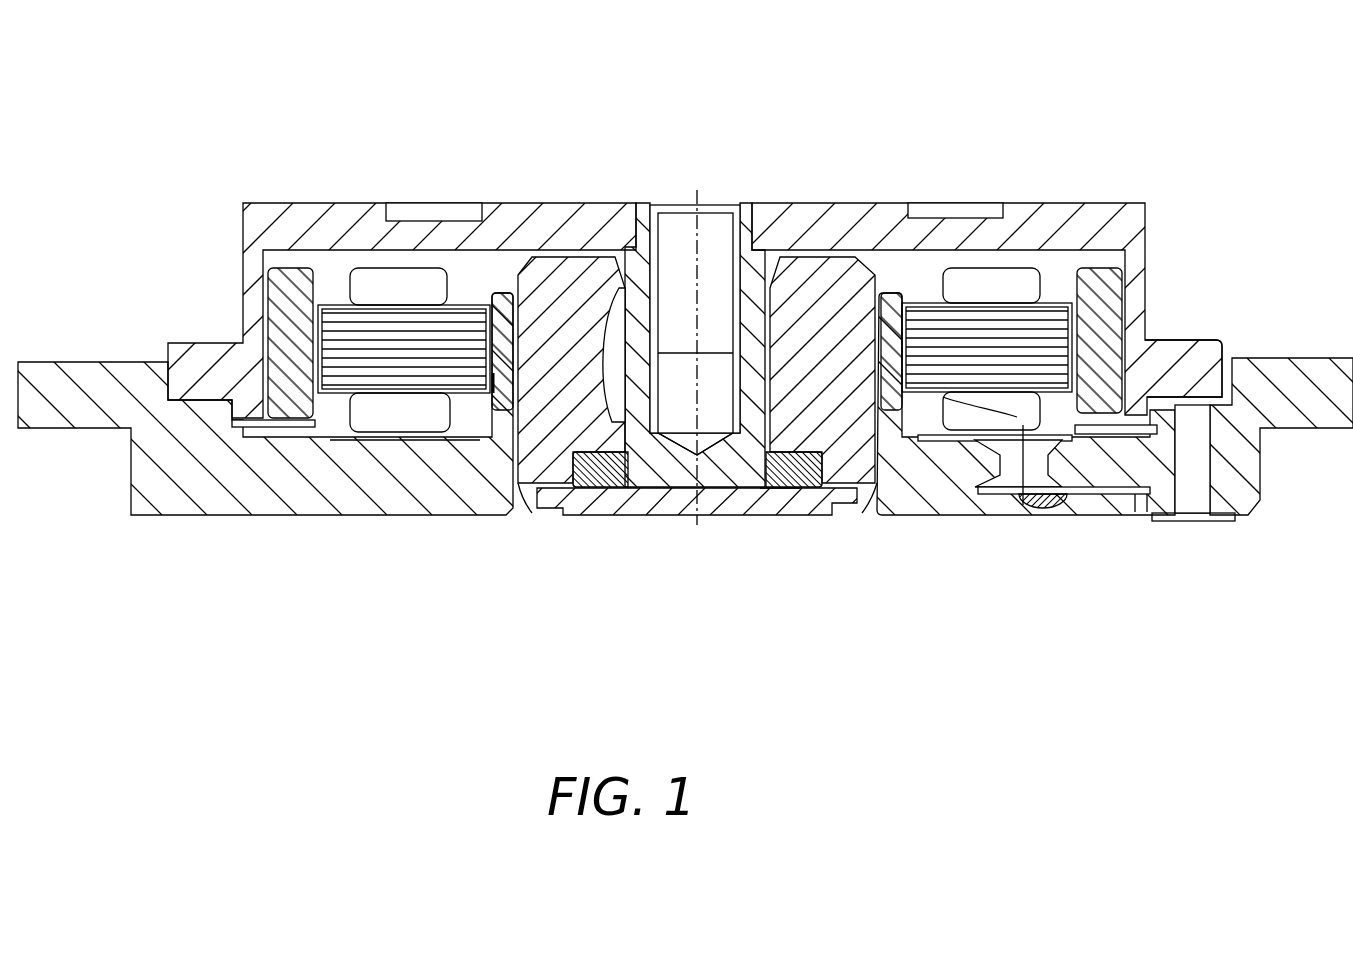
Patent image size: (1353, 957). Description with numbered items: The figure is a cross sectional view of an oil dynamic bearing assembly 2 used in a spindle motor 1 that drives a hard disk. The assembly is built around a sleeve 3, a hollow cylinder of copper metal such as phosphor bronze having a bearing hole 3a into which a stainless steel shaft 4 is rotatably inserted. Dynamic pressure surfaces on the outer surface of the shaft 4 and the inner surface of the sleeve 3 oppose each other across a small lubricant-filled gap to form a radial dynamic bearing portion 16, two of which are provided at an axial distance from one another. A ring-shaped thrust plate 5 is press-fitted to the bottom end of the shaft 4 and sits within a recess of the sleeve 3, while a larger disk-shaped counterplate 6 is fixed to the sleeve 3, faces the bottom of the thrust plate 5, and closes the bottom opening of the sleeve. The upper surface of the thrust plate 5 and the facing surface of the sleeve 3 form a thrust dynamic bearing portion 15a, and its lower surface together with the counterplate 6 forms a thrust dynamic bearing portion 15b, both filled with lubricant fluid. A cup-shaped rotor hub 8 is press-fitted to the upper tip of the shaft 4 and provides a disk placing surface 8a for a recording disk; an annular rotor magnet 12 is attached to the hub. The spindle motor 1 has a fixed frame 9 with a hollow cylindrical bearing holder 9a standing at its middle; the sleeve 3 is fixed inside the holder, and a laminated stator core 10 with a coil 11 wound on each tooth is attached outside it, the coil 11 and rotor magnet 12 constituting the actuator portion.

The spindle motor 1 is at (982, 114).
The oil dynamic bearing assembly 2 is at (570, 548).
The sleeve 3 is at (820, 352).
The bearing hole 3a is at (740, 440).
The shaft 4 is at (712, 203).
The thrust plate 5 is at (788, 473).
The counterplate 6 is at (665, 502).
The rotor hub 8 is at (563, 222).
The disk placing surface 8a is at (1203, 340).
The fixed frame 9 is at (922, 495).
The bearing holder 9a is at (493, 370).
The stator core 10 is at (341, 345).
The coil 11 is at (383, 280).
The rotor magnet 12 is at (1098, 335).
The thrust dynamic bearing portion 15a is at (828, 450).
The thrust dynamic bearing portion 15b is at (776, 490).
The radial dynamic bearing portion 16 is at (618, 428).